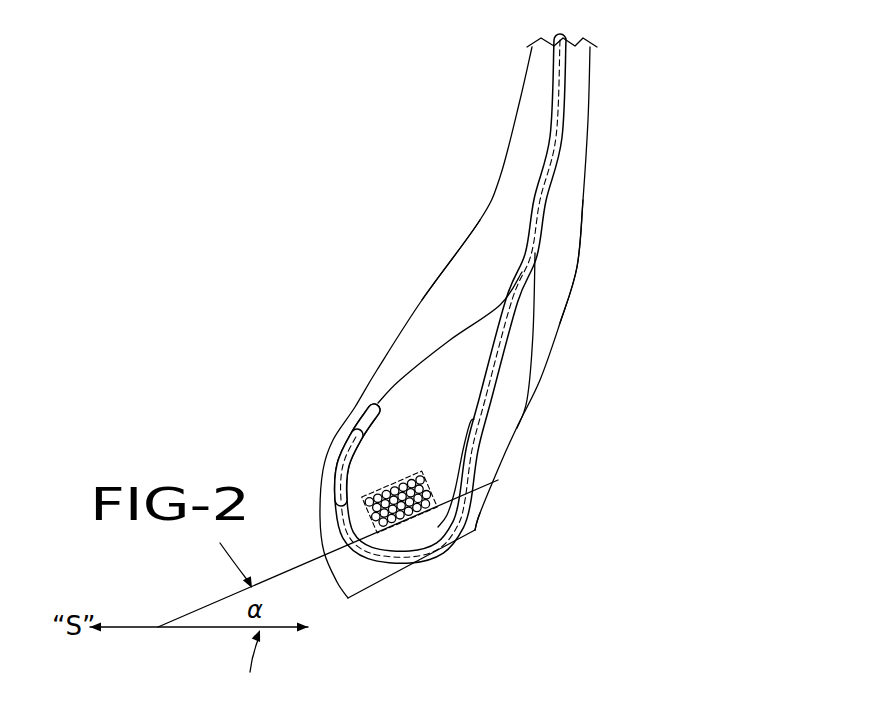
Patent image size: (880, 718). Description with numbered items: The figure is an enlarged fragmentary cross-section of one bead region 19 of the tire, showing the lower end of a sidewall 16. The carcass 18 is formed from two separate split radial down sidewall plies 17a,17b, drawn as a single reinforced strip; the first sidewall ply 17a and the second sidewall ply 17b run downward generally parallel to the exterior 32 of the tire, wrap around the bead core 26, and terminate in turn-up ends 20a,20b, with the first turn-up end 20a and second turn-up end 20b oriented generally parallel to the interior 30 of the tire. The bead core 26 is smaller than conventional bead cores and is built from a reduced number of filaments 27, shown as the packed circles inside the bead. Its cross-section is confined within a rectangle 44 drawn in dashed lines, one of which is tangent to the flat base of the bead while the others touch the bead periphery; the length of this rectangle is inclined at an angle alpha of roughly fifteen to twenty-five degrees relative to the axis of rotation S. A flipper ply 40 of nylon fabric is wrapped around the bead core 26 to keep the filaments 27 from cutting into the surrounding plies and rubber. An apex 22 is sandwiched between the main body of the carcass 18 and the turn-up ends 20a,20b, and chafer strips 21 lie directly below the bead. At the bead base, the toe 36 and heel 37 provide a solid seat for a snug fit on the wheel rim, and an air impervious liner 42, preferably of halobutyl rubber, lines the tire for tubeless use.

The sidewall 16 is at (566, 329).
The split sidewall plies 17a,17b is at (539, 298).
The sidewall ply 17a is at (539, 298).
The sidewall ply 17b is at (555, 137).
The carcass 18 is at (497, 173).
The bead region 19 is at (426, 312).
The turn-up ends 20a,20b is at (282, 408).
The turn-up end 20a is at (282, 408).
The turn-up end 20b is at (367, 418).
The chafer strips 21 is at (509, 412).
The apex 22 is at (453, 363).
The bead core 26 is at (413, 512).
The filaments 27 is at (418, 502).
The interior 30 is at (420, 251).
The exterior 32 is at (588, 258).
The toe 36 is at (392, 582).
The heel 37 is at (477, 530).
The flipper ply 40 is at (355, 472).
The air impervious liner 42 is at (480, 220).
The rectangle 44 is at (508, 480).